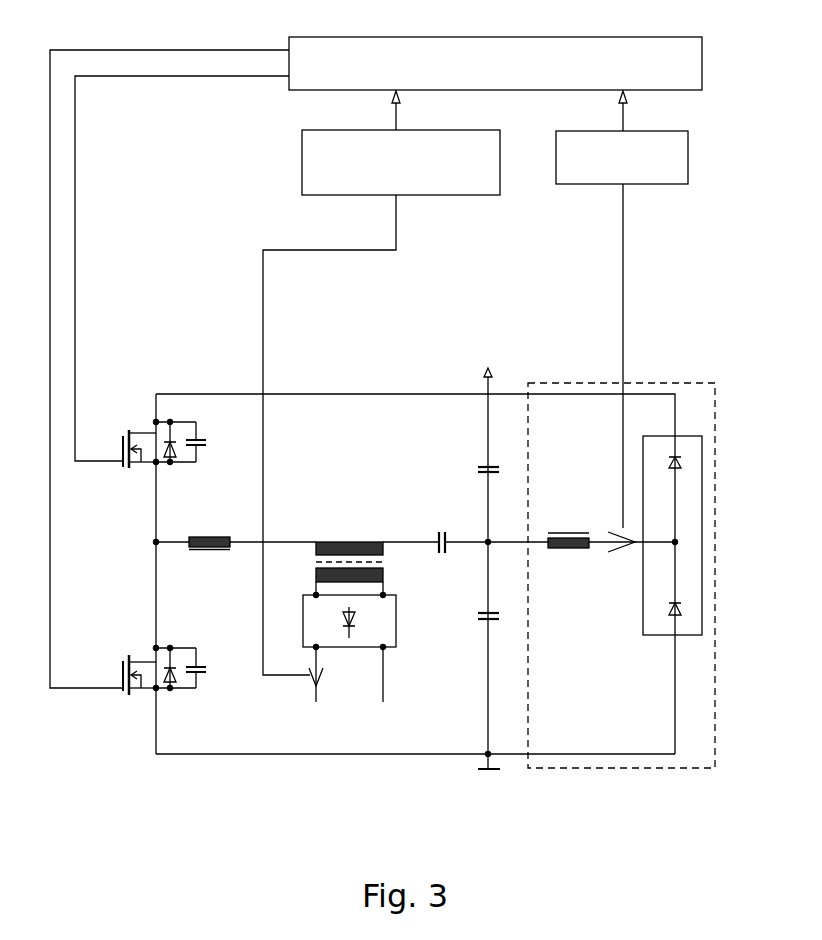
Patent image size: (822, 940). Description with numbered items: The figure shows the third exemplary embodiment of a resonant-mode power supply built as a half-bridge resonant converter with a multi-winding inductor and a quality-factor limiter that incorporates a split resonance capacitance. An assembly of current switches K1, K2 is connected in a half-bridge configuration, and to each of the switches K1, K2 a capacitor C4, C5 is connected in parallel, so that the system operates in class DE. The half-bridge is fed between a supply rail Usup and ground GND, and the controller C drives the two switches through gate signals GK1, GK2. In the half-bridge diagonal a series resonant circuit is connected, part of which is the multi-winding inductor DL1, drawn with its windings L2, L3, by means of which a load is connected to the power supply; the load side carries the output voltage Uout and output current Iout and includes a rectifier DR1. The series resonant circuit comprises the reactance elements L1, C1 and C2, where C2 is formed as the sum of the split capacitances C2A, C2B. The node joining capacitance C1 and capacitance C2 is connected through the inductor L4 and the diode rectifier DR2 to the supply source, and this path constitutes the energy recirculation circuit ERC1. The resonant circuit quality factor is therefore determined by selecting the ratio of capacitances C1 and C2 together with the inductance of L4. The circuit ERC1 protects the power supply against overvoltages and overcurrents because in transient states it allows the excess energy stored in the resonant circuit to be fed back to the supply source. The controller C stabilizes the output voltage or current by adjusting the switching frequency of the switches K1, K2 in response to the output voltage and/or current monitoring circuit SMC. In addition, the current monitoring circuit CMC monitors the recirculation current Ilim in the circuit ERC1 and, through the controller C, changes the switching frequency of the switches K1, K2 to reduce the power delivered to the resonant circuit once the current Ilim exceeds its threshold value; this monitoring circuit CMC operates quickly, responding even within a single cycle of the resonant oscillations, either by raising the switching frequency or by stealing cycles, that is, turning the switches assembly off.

The controller C is at (504, 59).
The gate control signal 1 GK1 is at (196, 267).
The gate control signal 2 GK2 is at (184, 367).
The output voltage and/or current monitoring circuit SMC is at (371, 383).
The current monitoring circuit CMC is at (648, 309).
The current switch K1 is at (127, 444).
The current switch K2 is at (127, 671).
The capacitor C4 is at (203, 442).
The capacitor C5 is at (203, 668).
The inductor L1 is at (209, 534).
The inductor L2 is at (349, 537).
The inductor L3 is at (336, 578).
The inductor L4 is at (568, 532).
The multi-winding inductor DL1 is at (367, 564).
The rectifier diode DR1 is at (349, 616).
The diode rectifier DR2 is at (672, 595).
The capacitor C1 is at (443, 532).
The split resonance capacitance C2 is at (422, 434).
The capacitor C2A is at (478, 470).
The capacitor C2B is at (478, 617).
The energy recirculation circuit ERC1 is at (621, 569).
The supply voltage Usup is at (473, 374).
The ground GND is at (487, 770).
The output current Iout is at (306, 674).
The output voltage Uout is at (362, 674).
The recirculation circuit current Ilim is at (621, 554).